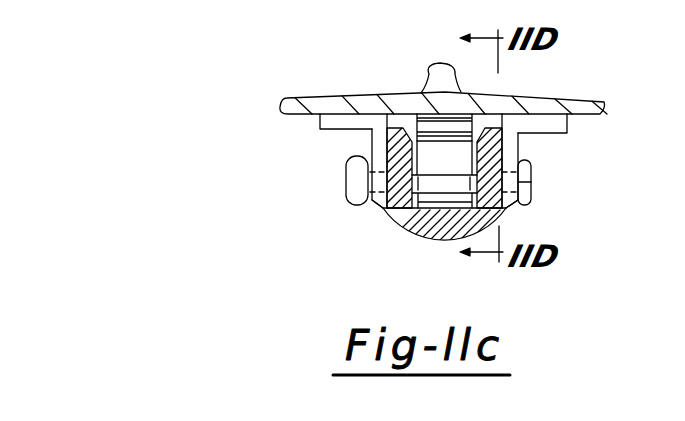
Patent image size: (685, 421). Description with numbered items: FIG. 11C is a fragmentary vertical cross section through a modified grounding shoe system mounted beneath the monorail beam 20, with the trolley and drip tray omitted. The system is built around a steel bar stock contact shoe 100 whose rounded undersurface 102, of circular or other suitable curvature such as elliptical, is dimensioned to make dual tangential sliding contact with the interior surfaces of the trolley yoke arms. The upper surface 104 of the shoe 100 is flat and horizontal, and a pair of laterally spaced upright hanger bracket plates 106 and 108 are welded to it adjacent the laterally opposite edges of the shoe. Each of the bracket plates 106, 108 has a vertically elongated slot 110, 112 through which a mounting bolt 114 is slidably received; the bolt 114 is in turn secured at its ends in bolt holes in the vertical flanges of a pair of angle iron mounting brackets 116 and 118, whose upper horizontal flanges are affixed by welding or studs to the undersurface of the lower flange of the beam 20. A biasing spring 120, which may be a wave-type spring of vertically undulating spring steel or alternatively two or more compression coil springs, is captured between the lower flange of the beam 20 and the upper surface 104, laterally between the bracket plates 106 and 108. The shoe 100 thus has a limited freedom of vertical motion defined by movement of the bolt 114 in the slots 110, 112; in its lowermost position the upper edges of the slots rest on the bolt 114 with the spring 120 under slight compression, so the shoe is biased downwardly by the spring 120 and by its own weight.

The monorail beam 20 is at (608, 98).
The contact shoe 100 is at (388, 228).
The rounded undersurface 102 is at (496, 217).
The upper surface 104 is at (457, 196).
The hanger bracket plate 106 is at (494, 124).
The hanger bracket plate 108 is at (400, 114).
The vertically elongated slot 110 is at (505, 150).
The vertically elongated slot 112 is at (350, 150).
The mounting bolt 114 is at (533, 178).
The angle iron mounting bracket 116 is at (568, 123).
The angle iron mounting bracket 118 is at (320, 129).
The biasing spring 120 is at (414, 106).